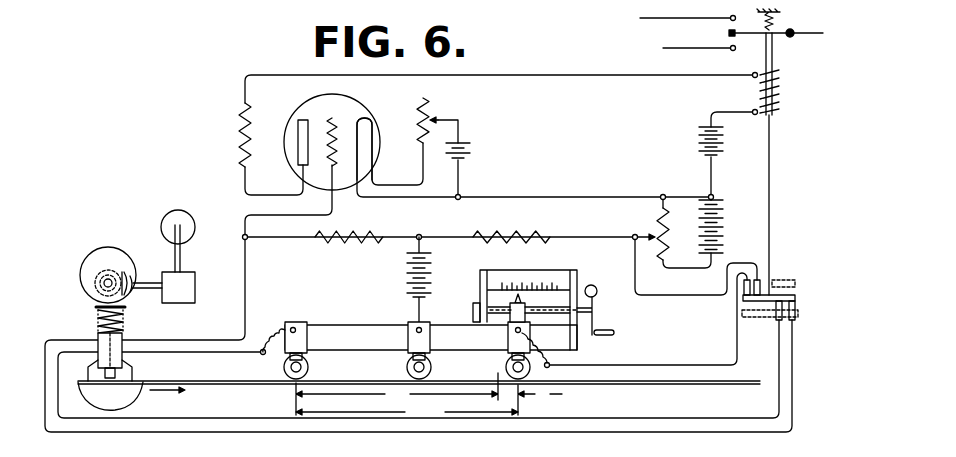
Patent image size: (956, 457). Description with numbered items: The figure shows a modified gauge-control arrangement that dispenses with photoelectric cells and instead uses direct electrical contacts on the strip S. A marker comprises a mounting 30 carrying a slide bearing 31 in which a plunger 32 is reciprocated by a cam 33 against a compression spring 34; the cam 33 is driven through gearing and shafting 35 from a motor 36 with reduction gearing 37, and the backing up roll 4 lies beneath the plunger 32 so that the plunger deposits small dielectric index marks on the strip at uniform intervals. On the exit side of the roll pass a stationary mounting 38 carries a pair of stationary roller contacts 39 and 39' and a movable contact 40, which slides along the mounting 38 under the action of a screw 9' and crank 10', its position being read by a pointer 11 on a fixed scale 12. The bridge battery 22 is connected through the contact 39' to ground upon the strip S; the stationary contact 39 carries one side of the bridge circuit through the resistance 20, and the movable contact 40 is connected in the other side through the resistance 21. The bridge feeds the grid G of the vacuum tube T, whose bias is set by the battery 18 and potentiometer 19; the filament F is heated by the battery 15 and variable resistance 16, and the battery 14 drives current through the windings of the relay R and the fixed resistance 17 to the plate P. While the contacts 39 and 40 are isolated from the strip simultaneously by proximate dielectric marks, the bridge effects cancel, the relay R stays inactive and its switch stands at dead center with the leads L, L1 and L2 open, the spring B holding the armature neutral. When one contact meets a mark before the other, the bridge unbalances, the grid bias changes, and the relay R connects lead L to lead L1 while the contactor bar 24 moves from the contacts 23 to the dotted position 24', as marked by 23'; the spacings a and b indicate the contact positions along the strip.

The backing up roll 4 is at (85, 404).
The screw 9' is at (535, 279).
The crank 10' is at (614, 310).
The pointer 11 is at (512, 298).
The fixed scale 12 is at (530, 283).
The battery 14 is at (698, 148).
The battery 15 is at (468, 152).
The variable resistance 16 is at (432, 117).
The fixed resistance 17 is at (238, 125).
The battery 18 is at (718, 228).
The potentiometer 19 is at (657, 225).
The bridge resistance 20 is at (333, 244).
The bridge resistance 21 is at (509, 236).
The bridge battery 22 is at (405, 283).
The contacts 23 is at (746, 304).
The contact socket 23' is at (791, 272).
The contactor bar 24 is at (801, 304).
The dotted line position 24' is at (786, 326).
The mounting 30 is at (133, 372).
The slide bearing 31 is at (125, 345).
The plunger 32 is at (96, 322).
The cam 33 is at (100, 254).
The compression spring 34 is at (121, 316).
The gearing and shafting 35 is at (122, 265).
The motor 36 is at (178, 210).
The reduction gearing 37 is at (192, 274).
The stationary mounting 38 is at (340, 330).
The stationary roller contact 39 is at (274, 350).
The stationary roller contact 39' is at (396, 351).
The movable contact 40 is at (505, 360).
The strip S is at (222, 383).
The vacuum tube T is at (300, 110).
The plate P is at (299, 160).
The grid G is at (336, 172).
The filament F is at (376, 147).
The relay R is at (781, 97).
The lead L is at (812, 34).
The spring B is at (783, 25).
The lead L1 is at (700, 48).
The lead L2 is at (665, 18).
The distance a is at (397, 394).
The distance b is at (540, 399).